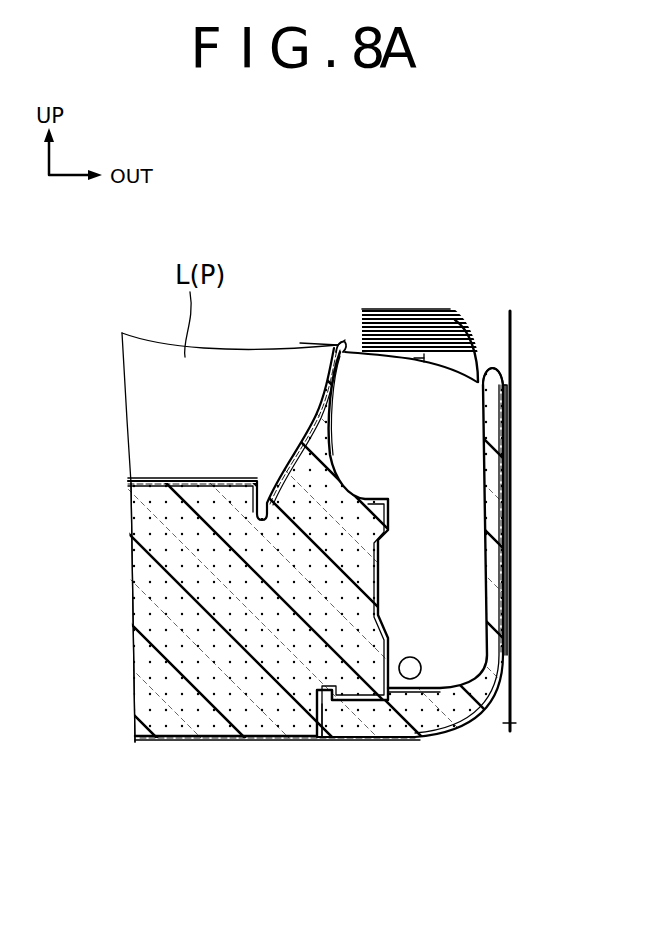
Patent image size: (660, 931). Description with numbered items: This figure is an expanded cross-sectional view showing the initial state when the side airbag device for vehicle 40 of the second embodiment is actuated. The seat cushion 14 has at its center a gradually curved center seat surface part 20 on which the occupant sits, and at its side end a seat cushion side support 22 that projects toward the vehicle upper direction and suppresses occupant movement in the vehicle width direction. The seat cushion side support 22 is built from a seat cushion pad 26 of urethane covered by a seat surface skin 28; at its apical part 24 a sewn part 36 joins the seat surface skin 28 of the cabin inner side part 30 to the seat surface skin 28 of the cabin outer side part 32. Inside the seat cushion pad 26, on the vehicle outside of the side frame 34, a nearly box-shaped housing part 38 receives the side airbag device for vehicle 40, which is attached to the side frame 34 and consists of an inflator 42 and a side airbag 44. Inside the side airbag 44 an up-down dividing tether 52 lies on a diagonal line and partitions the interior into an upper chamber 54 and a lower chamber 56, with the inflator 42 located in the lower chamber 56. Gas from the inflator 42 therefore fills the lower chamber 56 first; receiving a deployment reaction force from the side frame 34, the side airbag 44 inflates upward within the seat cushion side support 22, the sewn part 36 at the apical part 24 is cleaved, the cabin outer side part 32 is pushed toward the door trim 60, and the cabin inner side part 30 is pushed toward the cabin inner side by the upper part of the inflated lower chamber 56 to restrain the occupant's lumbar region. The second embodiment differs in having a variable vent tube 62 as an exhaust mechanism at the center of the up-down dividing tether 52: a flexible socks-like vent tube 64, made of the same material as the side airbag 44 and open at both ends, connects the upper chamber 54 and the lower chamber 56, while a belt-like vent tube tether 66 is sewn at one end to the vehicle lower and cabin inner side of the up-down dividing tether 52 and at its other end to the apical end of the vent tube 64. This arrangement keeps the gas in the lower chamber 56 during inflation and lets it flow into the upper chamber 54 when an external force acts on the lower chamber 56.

The seat cushion 14 is at (133, 718).
The center seat surface part 20 is at (135, 482).
The seat cushion side support 22 is at (335, 333).
The apical part 24 is at (327, 344).
The seat cushion pad 26 is at (383, 543).
The seat surface skin 28 is at (290, 455).
The cabin inner side part 30 is at (307, 417).
The cabin outer side part 32 is at (513, 412).
The side frame 34 is at (316, 730).
The sewn part 36 is at (343, 342).
The housing part 38 is at (368, 695).
The side airbag device for vehicle 40 is at (431, 693).
The inflator 42 is at (412, 656).
The side airbag 44 is at (455, 672).
The up-down dividing tether 52 is at (458, 373).
The upper chamber 54 is at (466, 345).
The lower chamber 56 is at (448, 508).
The door trim 60 is at (515, 722).
The variable vent tube 62 is at (418, 358).
The vent tube 64 is at (424, 362).
The vent tube tether 66 is at (380, 357).